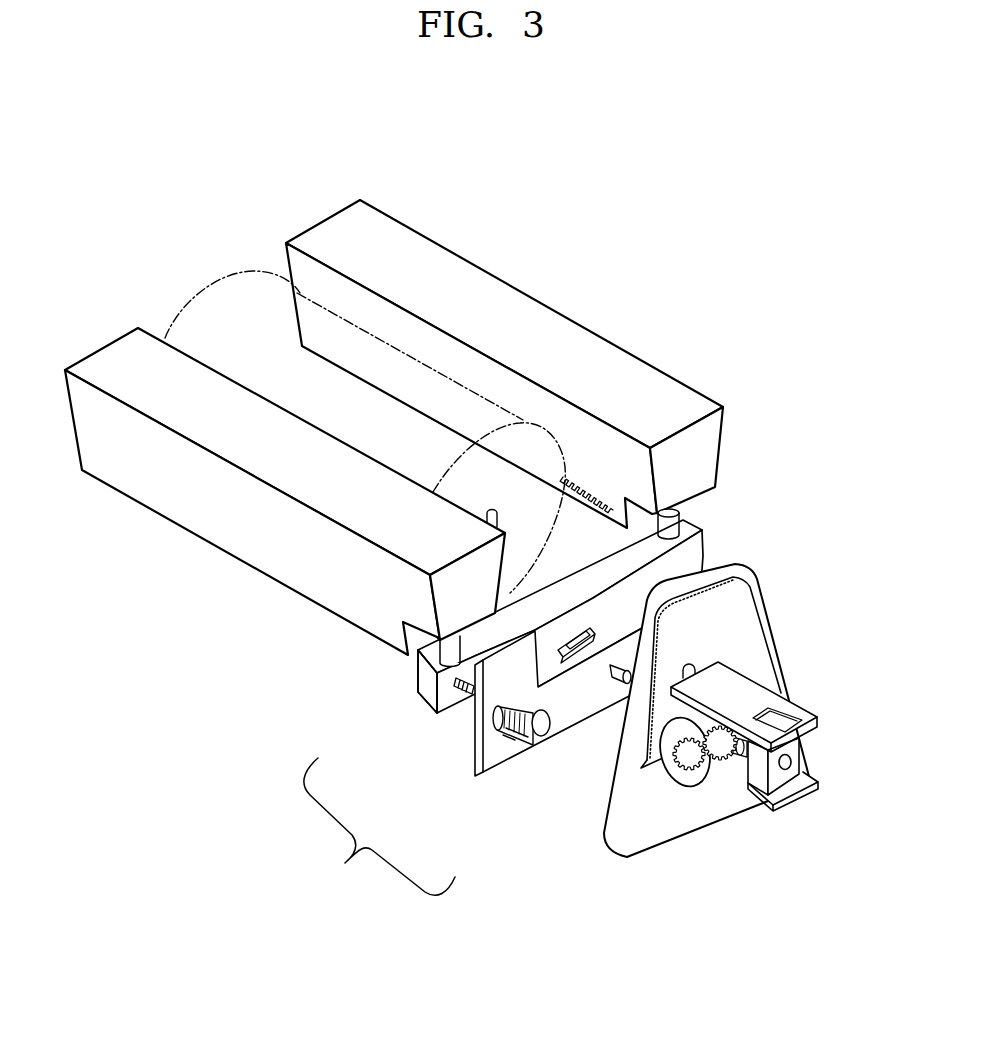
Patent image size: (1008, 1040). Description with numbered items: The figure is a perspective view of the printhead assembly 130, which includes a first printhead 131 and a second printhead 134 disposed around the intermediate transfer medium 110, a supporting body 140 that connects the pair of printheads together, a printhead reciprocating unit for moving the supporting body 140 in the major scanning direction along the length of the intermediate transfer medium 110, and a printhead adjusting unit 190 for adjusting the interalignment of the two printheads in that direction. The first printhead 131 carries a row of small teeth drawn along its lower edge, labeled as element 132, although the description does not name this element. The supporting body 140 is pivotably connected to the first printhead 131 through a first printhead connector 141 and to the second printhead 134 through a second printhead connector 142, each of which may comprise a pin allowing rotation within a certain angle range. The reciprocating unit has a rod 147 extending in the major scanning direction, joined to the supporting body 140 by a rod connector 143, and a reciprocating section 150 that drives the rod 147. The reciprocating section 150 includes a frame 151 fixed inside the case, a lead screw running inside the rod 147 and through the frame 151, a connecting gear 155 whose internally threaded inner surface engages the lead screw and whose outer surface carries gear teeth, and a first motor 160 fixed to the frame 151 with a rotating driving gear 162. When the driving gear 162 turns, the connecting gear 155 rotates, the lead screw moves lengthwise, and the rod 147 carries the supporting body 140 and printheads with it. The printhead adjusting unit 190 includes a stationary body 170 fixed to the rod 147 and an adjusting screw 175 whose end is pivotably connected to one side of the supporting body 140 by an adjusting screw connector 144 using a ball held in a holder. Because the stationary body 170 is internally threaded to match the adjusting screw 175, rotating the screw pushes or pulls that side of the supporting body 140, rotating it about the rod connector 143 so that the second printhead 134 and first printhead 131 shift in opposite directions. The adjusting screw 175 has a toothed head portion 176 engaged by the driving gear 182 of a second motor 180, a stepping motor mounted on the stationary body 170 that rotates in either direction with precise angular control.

The intermediate transfer medium 110 is at (198, 315).
The printhead assembly 130 is at (423, 481).
The first printhead 131 is at (453, 278).
The rack teeth 132 is at (608, 497).
The second printhead 134 is at (227, 535).
The supporting body 140 is at (561, 618).
The first printhead connector 141 is at (700, 517).
The second printhead connector 142 is at (438, 665).
The rod connector 143 is at (573, 638).
The adjusting screw connector 144 is at (440, 700).
The rod 147 is at (588, 640).
The reciprocating section 150 is at (752, 733).
The frame 151 is at (760, 627).
The connecting gear 155 is at (723, 752).
The first motor 160 is at (681, 807).
The driving gear 162 is at (685, 757).
The stationary body 170 is at (523, 736).
The adjusting screw 175 is at (508, 737).
The head portion 176 is at (540, 740).
The second motor 180 is at (502, 745).
The driving gear 182 is at (528, 750).
The printhead adjusting unit 190 is at (367, 827).